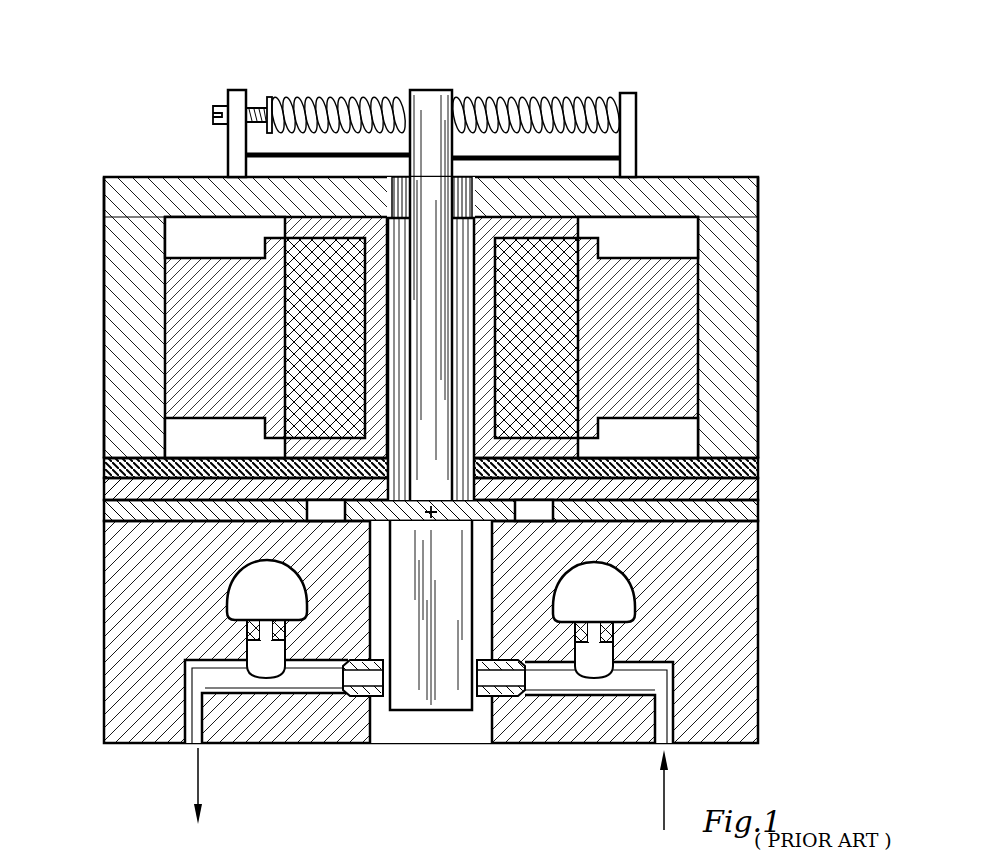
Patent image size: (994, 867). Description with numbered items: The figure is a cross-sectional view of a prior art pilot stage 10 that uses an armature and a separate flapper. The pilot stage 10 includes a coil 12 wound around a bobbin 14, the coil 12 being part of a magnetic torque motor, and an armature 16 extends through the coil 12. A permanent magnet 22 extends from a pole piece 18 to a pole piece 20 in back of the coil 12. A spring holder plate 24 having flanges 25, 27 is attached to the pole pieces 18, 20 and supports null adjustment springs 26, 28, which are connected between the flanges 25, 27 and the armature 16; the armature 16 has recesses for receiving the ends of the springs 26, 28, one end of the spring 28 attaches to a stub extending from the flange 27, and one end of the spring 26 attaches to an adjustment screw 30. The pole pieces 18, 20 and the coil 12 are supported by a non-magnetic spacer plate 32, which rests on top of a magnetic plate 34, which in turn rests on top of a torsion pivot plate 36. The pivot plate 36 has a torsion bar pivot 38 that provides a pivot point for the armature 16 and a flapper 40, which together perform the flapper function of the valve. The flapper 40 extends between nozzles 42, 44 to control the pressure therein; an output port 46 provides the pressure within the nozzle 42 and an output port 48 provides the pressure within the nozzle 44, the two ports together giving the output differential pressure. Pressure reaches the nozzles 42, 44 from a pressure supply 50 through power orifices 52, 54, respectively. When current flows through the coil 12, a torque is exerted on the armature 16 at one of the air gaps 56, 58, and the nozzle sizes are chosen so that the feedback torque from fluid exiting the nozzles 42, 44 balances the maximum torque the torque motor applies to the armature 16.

The pilot stage 10 is at (156, 118).
The coil 12 is at (568, 257).
The bobbin 14 is at (585, 228).
The armature 16 is at (435, 100).
The pole piece 18 is at (140, 187).
The pole piece 20 is at (740, 290).
The permanent magnet 22 is at (185, 334).
The spring holder plate 24 is at (600, 118).
The flange 25 is at (226, 95).
The null adjustment spring 26 is at (322, 97).
The flange 27 is at (630, 125).
The null adjustment spring 28 is at (570, 167).
The adjustment screw 30 is at (220, 108).
The non-magnetic spacer plate 32 is at (140, 458).
The magnetic plate 34 is at (117, 488).
The torsion pivot plate 36 is at (363, 518).
The torsion bar pivot 38 is at (432, 522).
The flapper 40 is at (407, 697).
The nozzle 42 is at (367, 690).
The nozzle 44 is at (510, 690).
The output port 46 is at (202, 728).
The output port 48 is at (662, 713).
The pressure supply 50 is at (247, 585).
The power orifice 52 is at (253, 640).
The power orifice 54 is at (602, 628).
The air gap 56 is at (401, 178).
The air gap 58 is at (463, 178).